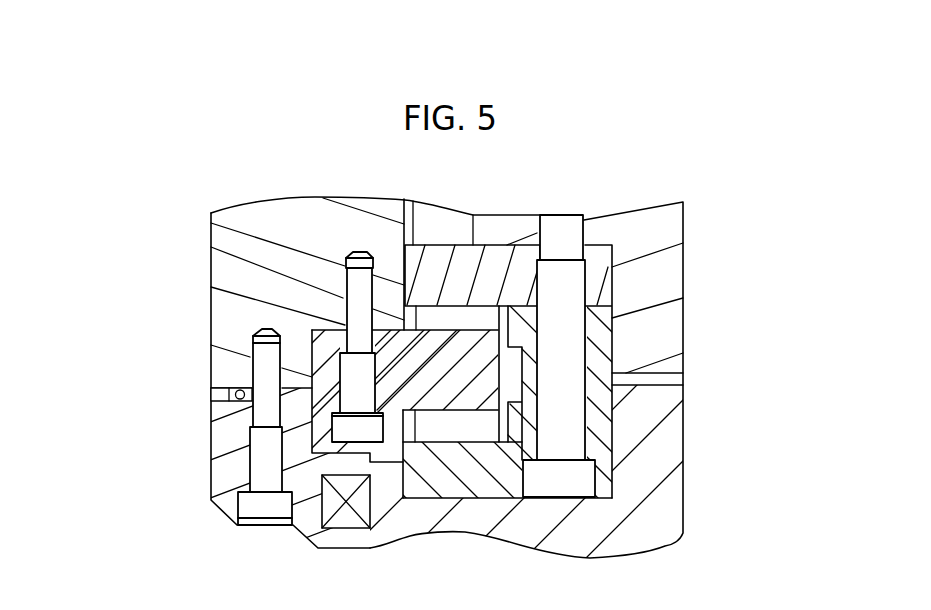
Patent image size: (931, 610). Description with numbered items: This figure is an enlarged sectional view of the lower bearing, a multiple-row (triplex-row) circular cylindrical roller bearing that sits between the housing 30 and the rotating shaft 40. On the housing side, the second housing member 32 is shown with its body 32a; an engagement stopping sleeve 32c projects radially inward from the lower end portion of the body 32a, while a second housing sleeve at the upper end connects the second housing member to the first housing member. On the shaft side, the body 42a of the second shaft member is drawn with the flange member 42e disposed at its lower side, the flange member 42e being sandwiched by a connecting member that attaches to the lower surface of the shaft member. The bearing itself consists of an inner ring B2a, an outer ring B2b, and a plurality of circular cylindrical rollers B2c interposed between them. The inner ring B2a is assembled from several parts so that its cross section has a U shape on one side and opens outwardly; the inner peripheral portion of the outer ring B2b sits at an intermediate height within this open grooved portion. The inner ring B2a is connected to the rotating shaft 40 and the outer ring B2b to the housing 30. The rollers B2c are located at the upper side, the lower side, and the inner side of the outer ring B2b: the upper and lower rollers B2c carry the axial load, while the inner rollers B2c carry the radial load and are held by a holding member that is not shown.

The housing 30 is at (253, 202).
The second housing member 32 is at (210, 213).
The body of the second housing member 32a is at (233, 335).
The engagement stopping sleeve 32c is at (233, 440).
The outer ring B2b is at (211, 237).
The circular cylindrical rollers B2c is at (475, 317).
The inner ring B2a is at (602, 343).
The rotating shaft 40 is at (688, 228).
The body of the second shaft member 42a is at (637, 278).
The flange member 42e is at (647, 530).